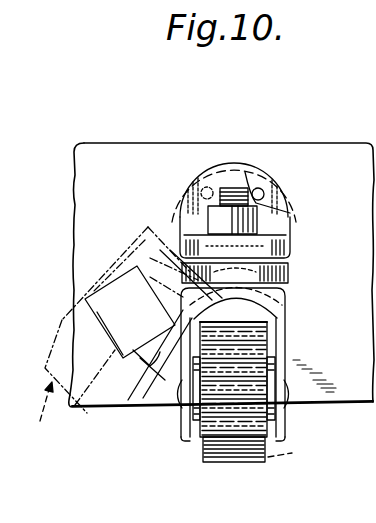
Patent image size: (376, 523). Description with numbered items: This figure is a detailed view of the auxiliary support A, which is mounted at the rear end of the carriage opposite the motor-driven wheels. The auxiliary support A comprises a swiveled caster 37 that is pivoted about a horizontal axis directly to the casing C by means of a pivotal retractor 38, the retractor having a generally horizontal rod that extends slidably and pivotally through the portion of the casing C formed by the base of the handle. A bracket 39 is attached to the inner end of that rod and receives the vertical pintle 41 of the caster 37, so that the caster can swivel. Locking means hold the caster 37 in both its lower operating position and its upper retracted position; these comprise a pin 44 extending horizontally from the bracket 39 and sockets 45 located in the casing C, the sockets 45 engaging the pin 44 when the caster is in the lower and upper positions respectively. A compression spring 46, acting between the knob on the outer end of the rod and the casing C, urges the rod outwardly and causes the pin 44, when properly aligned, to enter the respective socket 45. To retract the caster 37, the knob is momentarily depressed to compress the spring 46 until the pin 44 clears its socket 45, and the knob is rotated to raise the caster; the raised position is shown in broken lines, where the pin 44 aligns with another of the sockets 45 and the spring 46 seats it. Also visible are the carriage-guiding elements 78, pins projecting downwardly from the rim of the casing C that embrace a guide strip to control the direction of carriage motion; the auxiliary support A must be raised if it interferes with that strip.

The swiveled caster 37 is at (65, 321).
The pivotal retractor 38 is at (288, 236).
The bracket 39 is at (266, 257).
The vertical pintle 41 is at (262, 210).
The pin 44 is at (236, 163).
The sockets 45 is at (207, 186).
The compression spring 46 is at (205, 216).
The carriage-guiding elements 78 is at (284, 429).
The casing C is at (128, 150).
The auxiliary support A is at (168, 424).